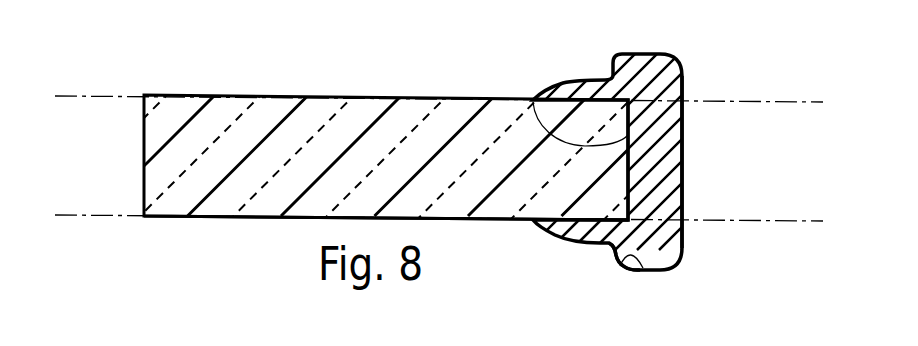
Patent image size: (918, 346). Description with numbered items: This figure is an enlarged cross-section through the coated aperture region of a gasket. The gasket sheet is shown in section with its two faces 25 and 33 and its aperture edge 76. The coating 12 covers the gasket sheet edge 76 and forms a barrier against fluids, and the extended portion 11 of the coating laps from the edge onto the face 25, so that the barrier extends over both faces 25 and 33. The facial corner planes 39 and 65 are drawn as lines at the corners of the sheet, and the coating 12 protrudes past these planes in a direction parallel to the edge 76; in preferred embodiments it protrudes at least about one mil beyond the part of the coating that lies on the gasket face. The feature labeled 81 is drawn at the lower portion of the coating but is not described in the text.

The extended portion of the coating 11 is at (577, 81).
The coating 12 is at (683, 141).
The face 25 is at (418, 98).
The face 33 is at (257, 218).
The facial corner plane 39 is at (806, 102).
The facial corner plane 65 is at (766, 222).
The gasket sheet edge 76 is at (533, 100).
The bead 81 is at (617, 258).